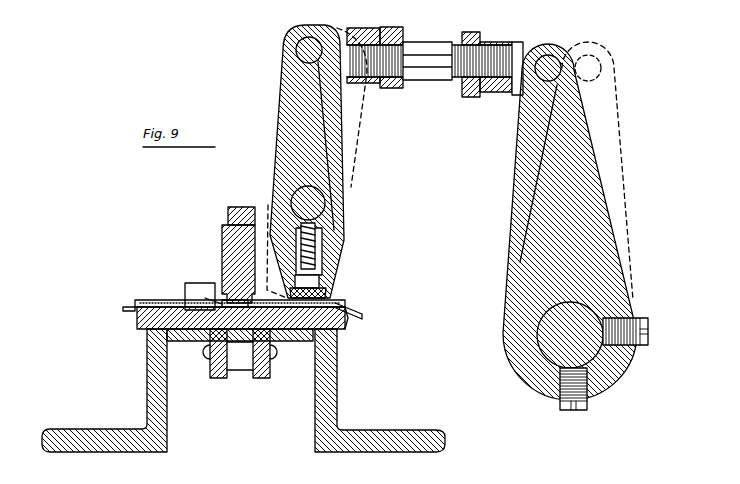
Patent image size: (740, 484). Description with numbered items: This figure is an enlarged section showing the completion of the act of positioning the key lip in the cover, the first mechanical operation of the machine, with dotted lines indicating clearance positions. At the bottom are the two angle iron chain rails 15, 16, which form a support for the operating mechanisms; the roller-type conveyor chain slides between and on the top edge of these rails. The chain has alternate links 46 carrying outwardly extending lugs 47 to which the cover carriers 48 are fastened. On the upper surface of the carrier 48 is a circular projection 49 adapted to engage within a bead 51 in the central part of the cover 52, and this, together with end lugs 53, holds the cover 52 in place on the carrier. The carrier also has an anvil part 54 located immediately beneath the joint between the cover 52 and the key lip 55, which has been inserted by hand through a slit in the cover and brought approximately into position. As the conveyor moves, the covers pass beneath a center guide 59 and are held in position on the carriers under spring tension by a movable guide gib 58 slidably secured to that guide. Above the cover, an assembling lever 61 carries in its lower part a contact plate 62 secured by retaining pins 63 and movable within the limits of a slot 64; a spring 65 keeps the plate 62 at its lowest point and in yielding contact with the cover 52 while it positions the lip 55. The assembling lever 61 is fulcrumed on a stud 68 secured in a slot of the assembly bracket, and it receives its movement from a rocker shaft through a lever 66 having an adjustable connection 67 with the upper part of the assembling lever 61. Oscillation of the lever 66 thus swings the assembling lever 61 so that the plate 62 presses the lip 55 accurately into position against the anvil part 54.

The angle iron chain rail 15 is at (337, 396).
The angle iron chain rail 16 is at (147, 398).
The alternate link 46 is at (212, 378).
The outwardly extending lug 47 is at (180, 345).
The cover carrier 48 is at (137, 318).
The circular projection 49 is at (225, 300).
The bead 51 is at (208, 300).
The cover 52 is at (148, 300).
The end lug 53 is at (198, 290).
The anvil part 54 is at (345, 328).
The key lip 55 is at (360, 317).
The movable guide gib 58 is at (222, 240).
The center guide 59 is at (240, 207).
The assembling lever 61 is at (287, 90).
The contact plate 62 is at (326, 294).
The retaining pin 63 is at (318, 280).
The slot 64 is at (322, 258).
The spring 65 is at (313, 238).
The lever 66 is at (525, 234).
The adjustable connection 67 is at (428, 56).
The stud 68 is at (318, 205).